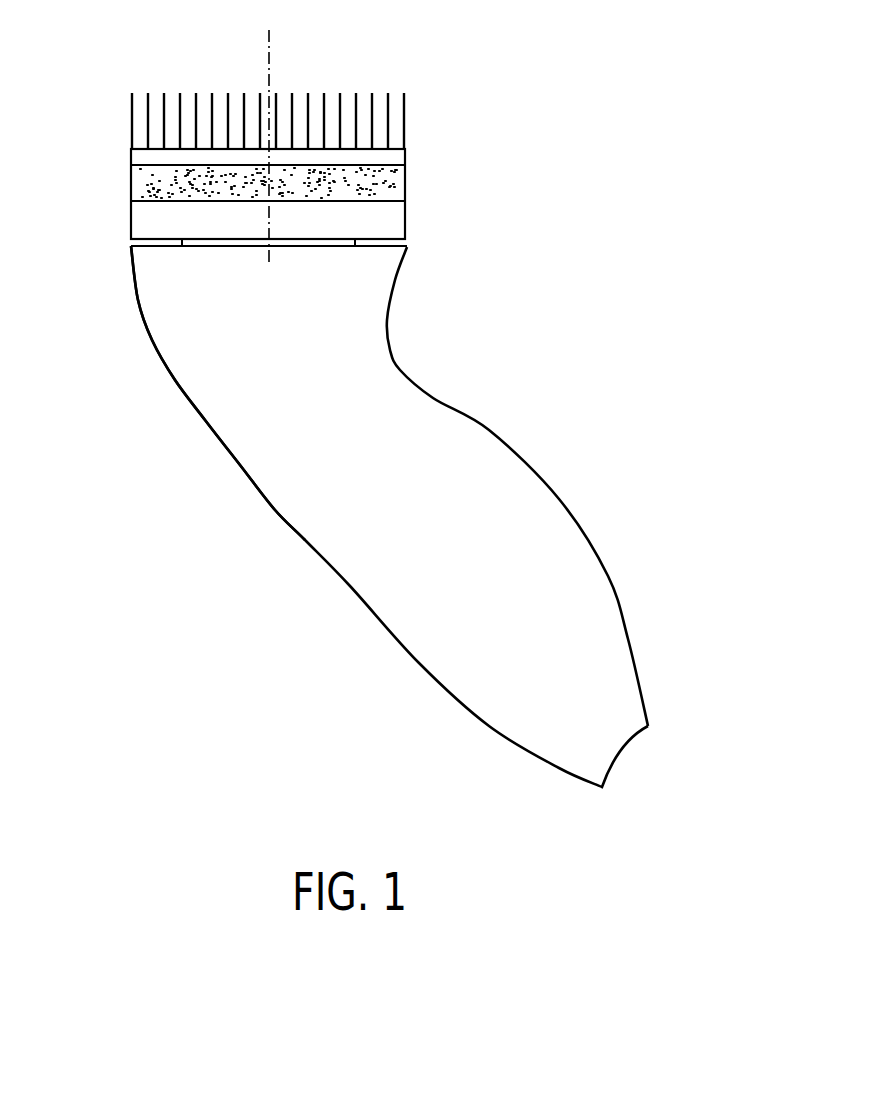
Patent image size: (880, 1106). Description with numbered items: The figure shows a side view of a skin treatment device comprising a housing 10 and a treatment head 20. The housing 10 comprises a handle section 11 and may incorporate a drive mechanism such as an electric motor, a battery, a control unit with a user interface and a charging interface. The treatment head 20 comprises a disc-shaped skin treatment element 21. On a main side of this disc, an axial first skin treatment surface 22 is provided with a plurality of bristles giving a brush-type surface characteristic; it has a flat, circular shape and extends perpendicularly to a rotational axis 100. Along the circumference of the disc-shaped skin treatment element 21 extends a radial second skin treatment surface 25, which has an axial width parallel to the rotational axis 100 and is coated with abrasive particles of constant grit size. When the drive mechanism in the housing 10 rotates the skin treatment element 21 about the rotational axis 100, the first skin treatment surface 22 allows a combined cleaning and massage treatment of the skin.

The housing 10 is at (650, 447).
The handle section 11 is at (265, 458).
The treatment head 20 is at (450, 192).
The disc-shaped skin treatment element 21 is at (143, 218).
The axial first skin treatment surface 22 is at (402, 143).
The radial second skin treatment surface 25 is at (150, 178).
The rotational axis 100 is at (270, 30).